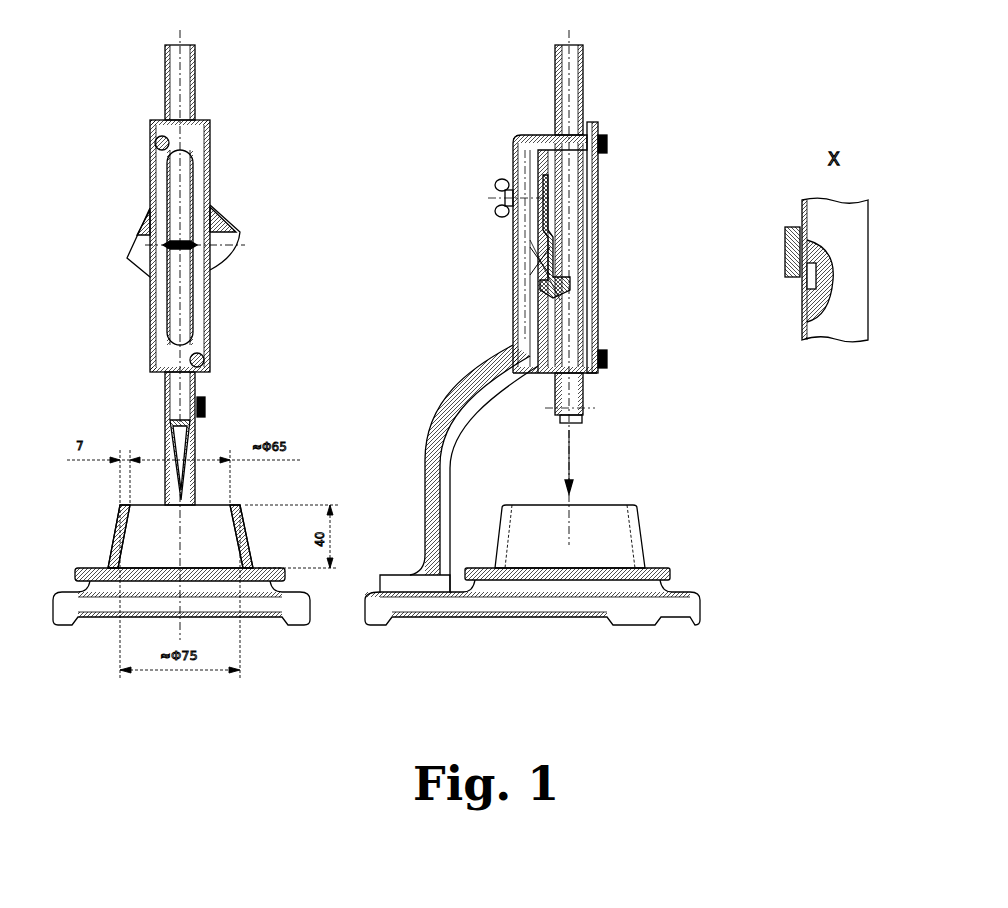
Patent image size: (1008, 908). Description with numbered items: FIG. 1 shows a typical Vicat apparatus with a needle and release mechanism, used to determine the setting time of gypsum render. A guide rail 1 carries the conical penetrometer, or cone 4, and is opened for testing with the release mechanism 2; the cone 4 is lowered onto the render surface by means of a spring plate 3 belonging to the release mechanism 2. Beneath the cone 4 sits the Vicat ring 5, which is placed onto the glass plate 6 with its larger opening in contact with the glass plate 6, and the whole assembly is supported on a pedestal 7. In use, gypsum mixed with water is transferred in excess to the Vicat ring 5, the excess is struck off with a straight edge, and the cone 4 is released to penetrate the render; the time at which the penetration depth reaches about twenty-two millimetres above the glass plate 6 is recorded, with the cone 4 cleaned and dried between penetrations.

The guide rail 1 is at (186, 71).
The release mechanism 2 is at (226, 235).
The spring plate 3 is at (793, 252).
The conical penetrometer (cone) 4 is at (576, 491).
The Vicat ring 5 is at (634, 535).
The glass plate 6 is at (673, 572).
The pedestal 7 is at (447, 422).